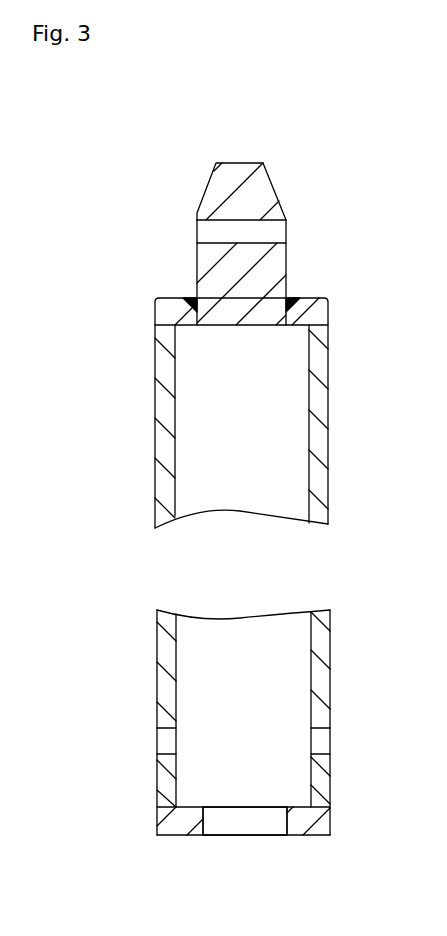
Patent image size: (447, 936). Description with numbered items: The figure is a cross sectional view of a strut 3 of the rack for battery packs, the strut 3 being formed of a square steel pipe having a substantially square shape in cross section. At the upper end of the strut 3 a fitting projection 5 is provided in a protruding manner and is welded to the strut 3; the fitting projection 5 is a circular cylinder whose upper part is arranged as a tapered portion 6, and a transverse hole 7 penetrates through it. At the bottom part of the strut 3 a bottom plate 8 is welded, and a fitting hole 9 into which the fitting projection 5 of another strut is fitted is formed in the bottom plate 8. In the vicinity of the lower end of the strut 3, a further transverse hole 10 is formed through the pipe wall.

The strut 3 is at (323, 403).
The fitting projection 5 is at (277, 265).
The tapered portion 6 is at (262, 186).
The transverse hole 7 is at (275, 228).
The bottom plate 8 is at (302, 835).
The fitting hole 9 is at (240, 835).
The transverse hole 10 is at (320, 737).